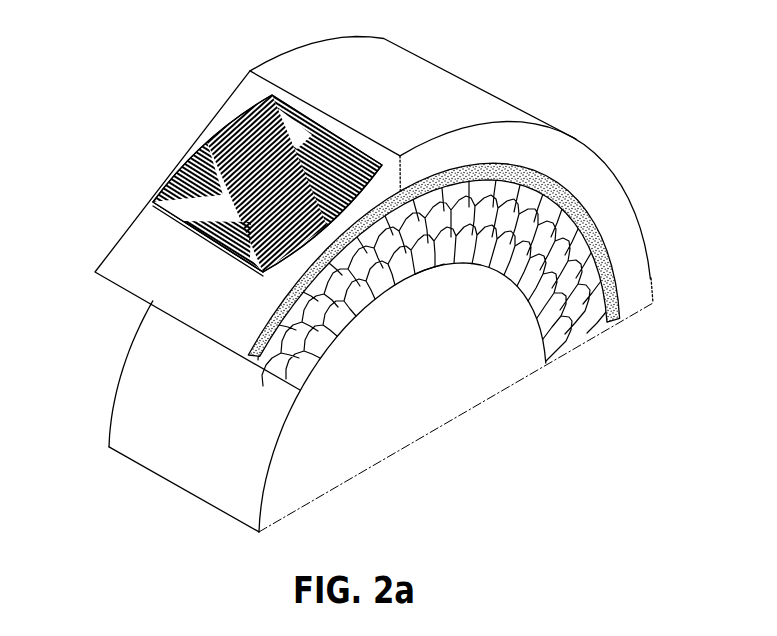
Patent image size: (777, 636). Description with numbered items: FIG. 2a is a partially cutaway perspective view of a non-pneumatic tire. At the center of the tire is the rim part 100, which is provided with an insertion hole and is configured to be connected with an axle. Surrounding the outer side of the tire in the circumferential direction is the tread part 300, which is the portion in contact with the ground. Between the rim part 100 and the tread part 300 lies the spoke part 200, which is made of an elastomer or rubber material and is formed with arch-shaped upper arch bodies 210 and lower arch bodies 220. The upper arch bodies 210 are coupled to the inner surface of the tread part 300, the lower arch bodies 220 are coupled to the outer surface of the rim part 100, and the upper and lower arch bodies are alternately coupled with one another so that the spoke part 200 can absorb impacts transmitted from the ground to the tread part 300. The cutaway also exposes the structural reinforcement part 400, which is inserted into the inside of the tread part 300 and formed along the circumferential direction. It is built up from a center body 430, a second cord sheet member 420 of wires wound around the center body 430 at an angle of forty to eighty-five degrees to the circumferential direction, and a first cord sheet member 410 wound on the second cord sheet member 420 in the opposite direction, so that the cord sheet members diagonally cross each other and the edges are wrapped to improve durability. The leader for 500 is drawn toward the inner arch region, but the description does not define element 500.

The rim part 100 is at (358, 403).
The spoke part 200 is at (459, 311).
The upper arch bodies 210 is at (600, 326).
The lower arch bodies 220 is at (543, 360).
The tread part 300 is at (477, 98).
The structural reinforcement part 400 is at (209, 173).
The first cord sheet member 410 is at (254, 171).
The second cord sheet member 420 is at (183, 158).
The center body 430 is at (168, 207).
The connecting portion 500 is at (417, 262).